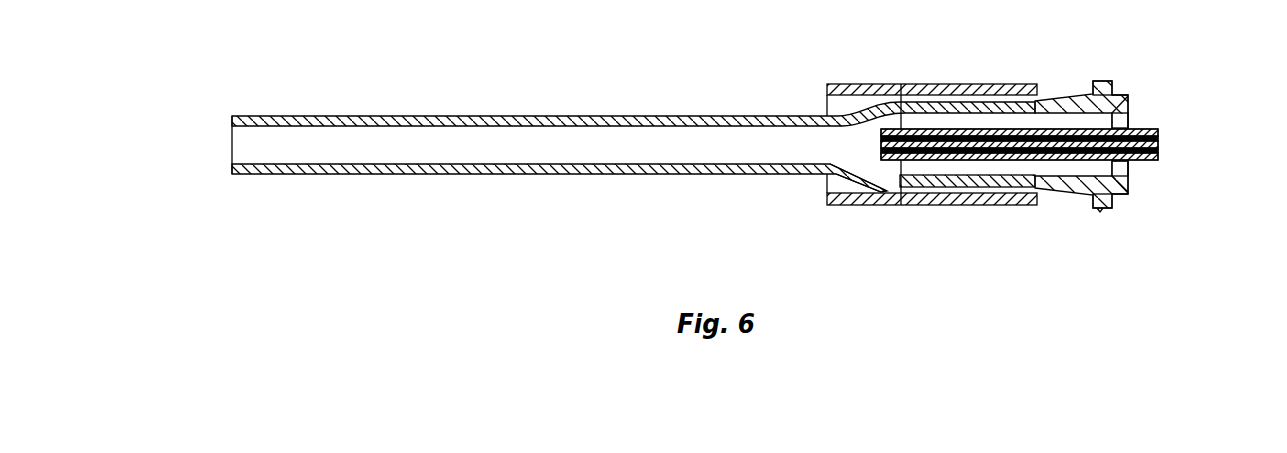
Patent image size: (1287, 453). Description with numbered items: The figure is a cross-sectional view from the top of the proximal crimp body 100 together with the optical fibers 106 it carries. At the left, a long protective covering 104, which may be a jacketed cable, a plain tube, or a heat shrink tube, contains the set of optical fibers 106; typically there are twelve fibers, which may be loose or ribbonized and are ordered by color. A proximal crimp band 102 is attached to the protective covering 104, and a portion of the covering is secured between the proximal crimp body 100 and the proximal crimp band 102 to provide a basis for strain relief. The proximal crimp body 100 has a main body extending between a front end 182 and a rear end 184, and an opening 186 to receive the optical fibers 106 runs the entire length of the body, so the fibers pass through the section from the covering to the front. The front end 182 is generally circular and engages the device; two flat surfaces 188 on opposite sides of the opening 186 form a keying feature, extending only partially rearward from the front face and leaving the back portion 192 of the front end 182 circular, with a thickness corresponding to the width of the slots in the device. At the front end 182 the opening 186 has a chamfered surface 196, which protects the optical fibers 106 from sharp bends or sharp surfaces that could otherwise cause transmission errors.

The protective covering 104 is at (540, 116).
The proximal crimp band 102 is at (855, 84).
The opening 186 is at (938, 125).
The rear end 184 is at (898, 196).
The proximal crimp body 100 is at (1072, 97).
The flat surfaces 188 is at (1118, 80).
The front end 182 is at (1128, 93).
The chamfered surface 196 is at (1120, 120).
The back portion 192 is at (1100, 209).
The optical fibers 106 is at (1160, 157).